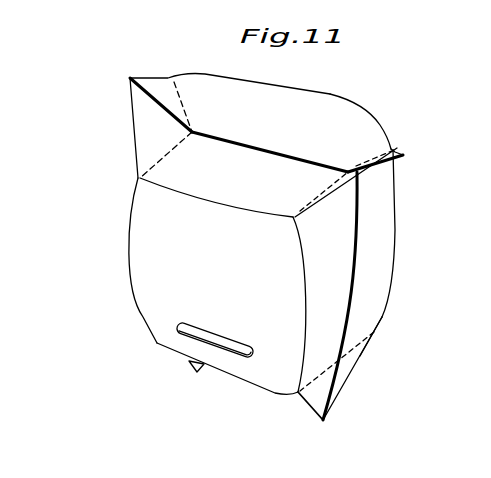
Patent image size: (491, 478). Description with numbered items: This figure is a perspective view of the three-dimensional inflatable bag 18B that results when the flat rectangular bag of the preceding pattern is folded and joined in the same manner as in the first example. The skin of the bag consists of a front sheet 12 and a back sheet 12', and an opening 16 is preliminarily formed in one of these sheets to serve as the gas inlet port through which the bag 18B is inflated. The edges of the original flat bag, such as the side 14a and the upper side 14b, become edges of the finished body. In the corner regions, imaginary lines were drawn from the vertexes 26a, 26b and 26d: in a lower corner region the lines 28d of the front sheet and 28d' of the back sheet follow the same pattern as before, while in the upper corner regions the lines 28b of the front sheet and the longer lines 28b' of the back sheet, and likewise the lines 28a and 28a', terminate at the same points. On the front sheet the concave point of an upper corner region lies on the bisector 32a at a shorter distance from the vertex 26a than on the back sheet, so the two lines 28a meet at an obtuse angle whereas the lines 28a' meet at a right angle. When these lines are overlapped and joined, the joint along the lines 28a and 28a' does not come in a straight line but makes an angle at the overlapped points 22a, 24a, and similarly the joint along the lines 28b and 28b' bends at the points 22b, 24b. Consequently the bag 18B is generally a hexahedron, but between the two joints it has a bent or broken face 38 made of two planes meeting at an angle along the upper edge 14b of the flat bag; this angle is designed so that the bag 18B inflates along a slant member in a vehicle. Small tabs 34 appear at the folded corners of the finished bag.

The inflatable bag 18B is at (117, 237).
The front sheet 12 is at (407, 233).
The back sheet 12' is at (122, 260).
The side of the bag 14a is at (352, 293).
The upper side of the bag 14b is at (258, 150).
The opening 16 is at (235, 352).
The overlapped point 22a is at (270, 136).
The overlapped point 22b is at (128, 124).
The overlapped point 24a is at (348, 172).
The overlapped point 24b is at (192, 132).
The vertex 26a is at (408, 156).
The vertex 26b is at (128, 78).
The vertex 26d is at (327, 422).
The imaginary line 28a is at (362, 142).
The imaginary line 28a' is at (318, 189).
The imaginary line 28b is at (208, 107).
The imaginary line 28b' is at (183, 156).
The imaginary line 28d is at (403, 336).
The imaginary line 28d' is at (337, 358).
The bisector 32a is at (397, 150).
The tab 34 is at (157, 85).
The bent face 38 is at (335, 115).